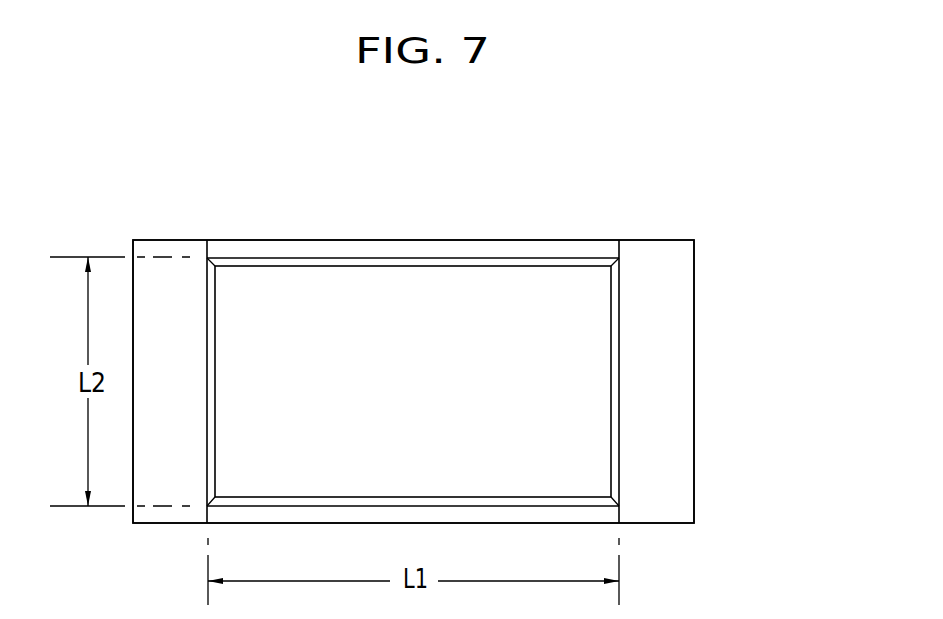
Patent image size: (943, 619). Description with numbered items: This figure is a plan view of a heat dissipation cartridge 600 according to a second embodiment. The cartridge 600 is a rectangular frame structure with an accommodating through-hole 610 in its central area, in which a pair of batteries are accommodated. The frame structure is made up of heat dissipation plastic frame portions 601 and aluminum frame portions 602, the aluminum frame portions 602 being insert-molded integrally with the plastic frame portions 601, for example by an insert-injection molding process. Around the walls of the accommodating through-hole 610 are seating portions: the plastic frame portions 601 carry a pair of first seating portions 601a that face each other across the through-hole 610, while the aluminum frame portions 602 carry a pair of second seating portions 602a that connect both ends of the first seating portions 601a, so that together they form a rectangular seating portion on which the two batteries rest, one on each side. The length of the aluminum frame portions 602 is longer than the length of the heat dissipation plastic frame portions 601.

The heat dissipation cartridge 600 is at (681, 219).
The heat dissipation plastic frame portion 601 is at (668, 333).
The first seating portion 601a is at (207, 295).
The aluminum frame portion 602 is at (400, 248).
The second seating portion 602a is at (262, 260).
The accommodating through-hole 610 is at (462, 287).